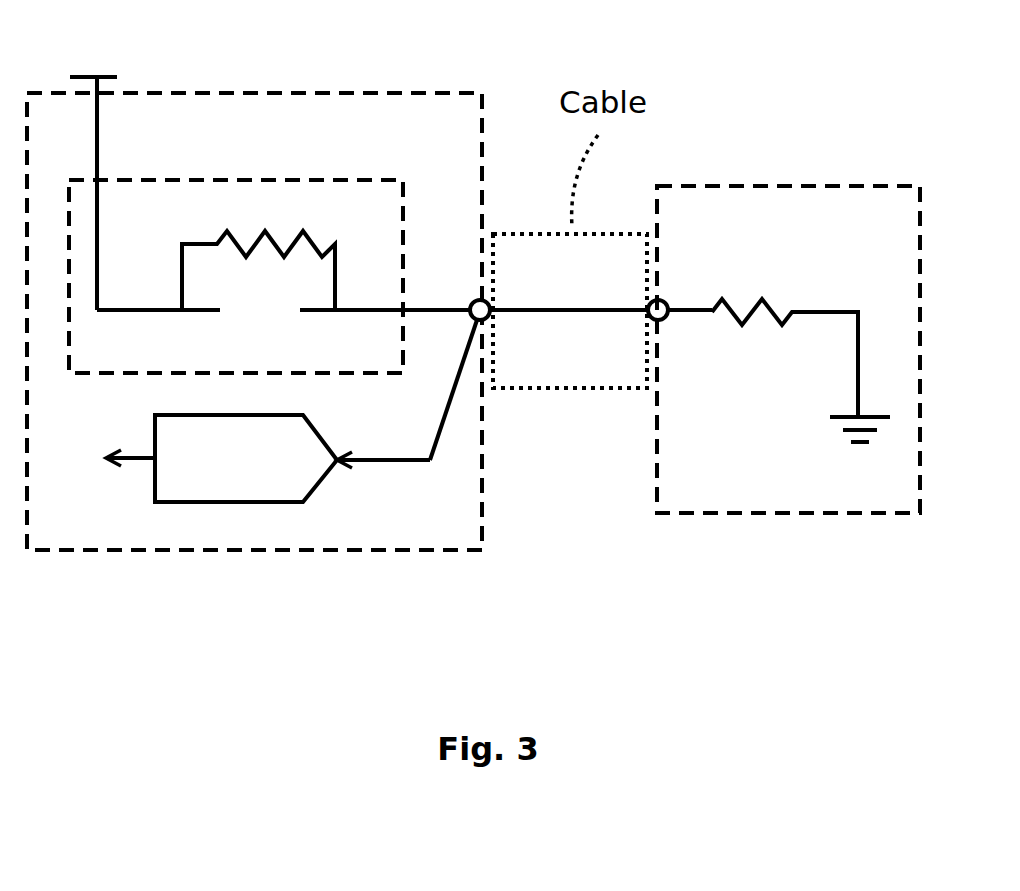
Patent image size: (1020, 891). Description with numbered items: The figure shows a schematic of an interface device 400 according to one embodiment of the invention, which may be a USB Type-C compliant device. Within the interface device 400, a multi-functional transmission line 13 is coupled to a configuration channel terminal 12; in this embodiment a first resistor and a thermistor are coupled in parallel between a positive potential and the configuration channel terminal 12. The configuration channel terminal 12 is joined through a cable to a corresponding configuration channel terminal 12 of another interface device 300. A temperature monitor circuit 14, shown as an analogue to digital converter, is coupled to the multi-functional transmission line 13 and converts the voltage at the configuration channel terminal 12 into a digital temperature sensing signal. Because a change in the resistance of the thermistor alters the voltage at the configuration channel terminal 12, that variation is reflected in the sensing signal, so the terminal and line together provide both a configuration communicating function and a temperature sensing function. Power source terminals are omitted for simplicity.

The interface device 400 is at (325, 93).
The multi-functional transmission line 13 is at (350, 180).
The configuration channel terminal 12 is at (470, 305).
The temperature monitor circuit 14 is at (325, 478).
The interface device 300 is at (705, 187).